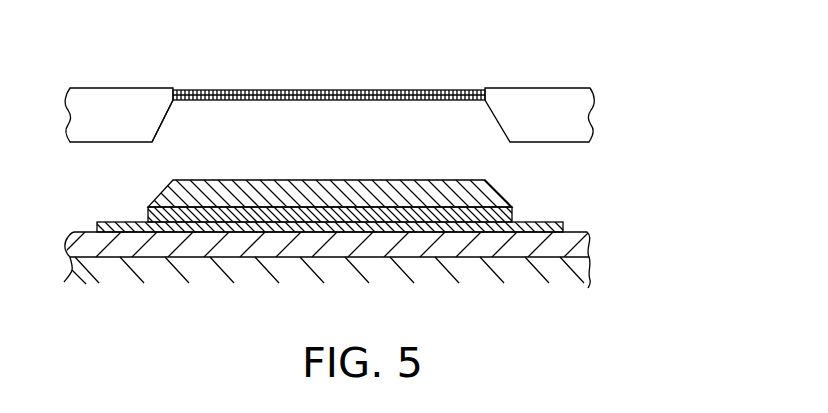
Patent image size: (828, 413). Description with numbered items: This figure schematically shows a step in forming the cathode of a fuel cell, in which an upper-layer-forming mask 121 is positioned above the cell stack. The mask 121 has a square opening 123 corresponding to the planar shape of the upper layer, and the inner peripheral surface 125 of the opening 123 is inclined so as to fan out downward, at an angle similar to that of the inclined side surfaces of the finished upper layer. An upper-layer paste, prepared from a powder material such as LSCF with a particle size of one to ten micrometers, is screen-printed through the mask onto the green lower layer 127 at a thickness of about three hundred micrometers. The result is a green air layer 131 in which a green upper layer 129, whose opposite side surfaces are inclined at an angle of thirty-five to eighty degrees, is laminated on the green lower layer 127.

The upper-layer-forming mask 121 is at (528, 104).
The opening 123 is at (483, 98).
The inner peripheral surface 125 is at (162, 121).
The green lower layer 127 is at (500, 218).
The green upper layer 129 is at (487, 192).
The green air layer 131 is at (405, 186).